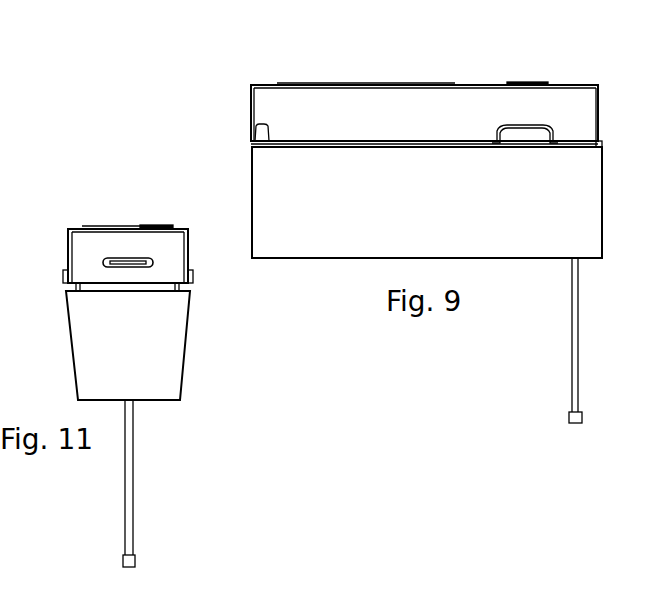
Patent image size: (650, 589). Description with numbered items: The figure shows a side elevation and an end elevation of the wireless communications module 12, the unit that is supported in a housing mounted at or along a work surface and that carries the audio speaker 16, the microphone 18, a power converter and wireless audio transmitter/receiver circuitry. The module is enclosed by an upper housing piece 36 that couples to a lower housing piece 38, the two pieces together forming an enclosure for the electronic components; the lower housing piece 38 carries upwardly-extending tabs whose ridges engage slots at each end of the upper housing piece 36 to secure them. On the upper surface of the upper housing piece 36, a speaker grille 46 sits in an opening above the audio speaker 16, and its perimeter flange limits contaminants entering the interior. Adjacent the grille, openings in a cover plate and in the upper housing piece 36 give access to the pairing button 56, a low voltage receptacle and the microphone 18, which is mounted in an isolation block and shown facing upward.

In FIG. 9, the wireless communications module 12 is at (232, 50).
In FIG. 11, the wireless communications module 12 is at (191, 205).
In FIG. 9, the audio speaker 16 is at (346, 82).
In FIG. 9, the microphone 18 is at (572, 360).
In FIG. 11, the microphone 18 is at (133, 506).
In FIG. 9, the upper housing piece 36 is at (252, 112).
In FIG. 11, the upper housing piece 36 is at (68, 244).
In FIG. 9, the lower housing piece 38 is at (270, 260).
In FIG. 11, the lower housing piece 38 is at (70, 350).
In FIG. 9, the speaker grille 46 is at (385, 82).
In FIG. 9, the pairing button 56 is at (518, 82).